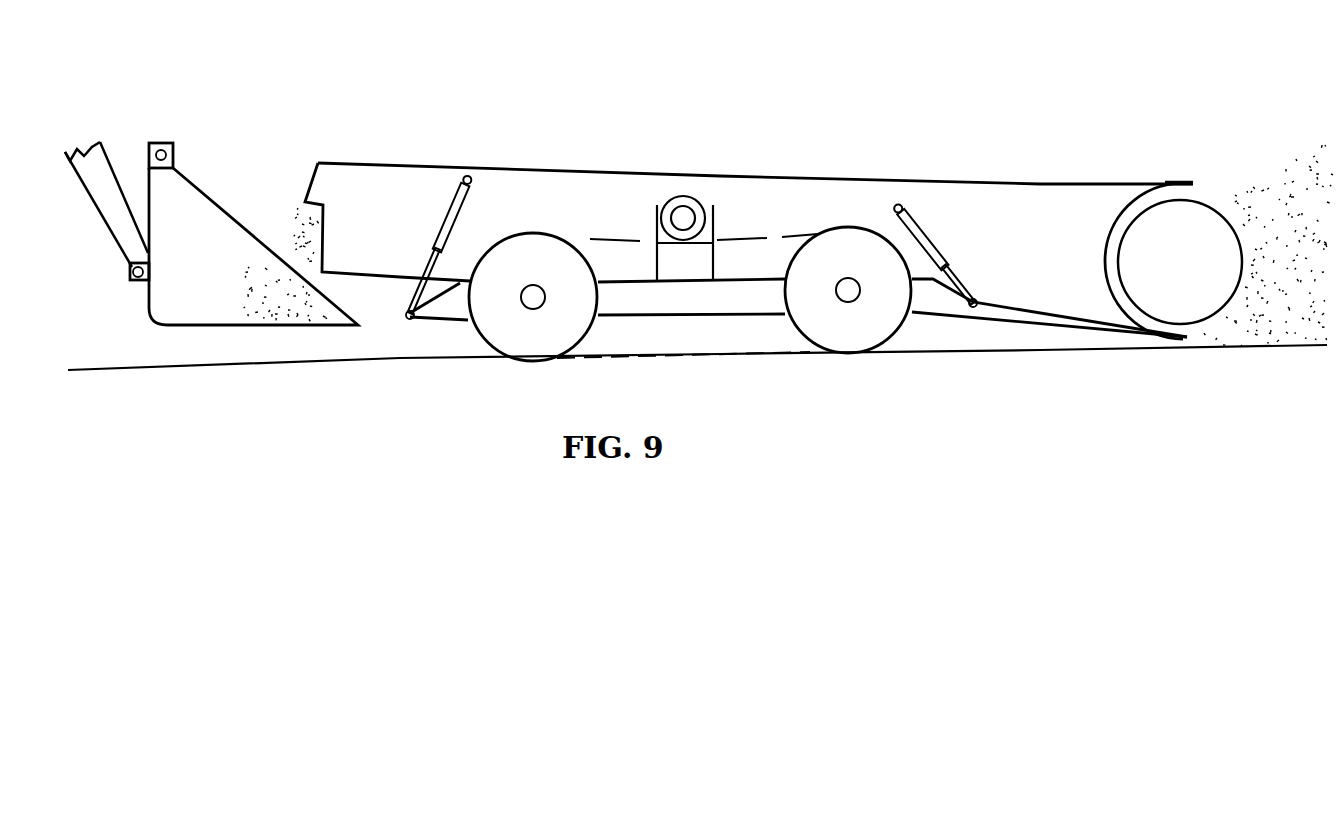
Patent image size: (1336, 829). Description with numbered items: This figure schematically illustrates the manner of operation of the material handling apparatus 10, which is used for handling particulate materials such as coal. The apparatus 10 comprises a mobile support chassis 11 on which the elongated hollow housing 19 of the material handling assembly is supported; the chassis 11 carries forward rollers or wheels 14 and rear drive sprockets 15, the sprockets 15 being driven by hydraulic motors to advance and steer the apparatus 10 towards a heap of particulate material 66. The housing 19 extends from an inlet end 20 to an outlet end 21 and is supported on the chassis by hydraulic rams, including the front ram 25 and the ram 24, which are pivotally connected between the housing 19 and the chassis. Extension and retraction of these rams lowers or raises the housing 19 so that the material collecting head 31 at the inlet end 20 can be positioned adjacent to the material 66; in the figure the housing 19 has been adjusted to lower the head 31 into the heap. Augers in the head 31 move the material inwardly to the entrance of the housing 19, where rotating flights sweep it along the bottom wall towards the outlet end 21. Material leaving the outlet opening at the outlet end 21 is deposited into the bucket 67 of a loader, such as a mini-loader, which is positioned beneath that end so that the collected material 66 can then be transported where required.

The material handling apparatus 10 is at (605, 160).
The mobile support chassis 11 is at (421, 336).
The forward rollers or wheels 14 is at (843, 342).
The rear drive sprockets 15 is at (523, 347).
The elongated hollow housing 19 is at (757, 177).
The inlet end 20 is at (1203, 151).
The outlet end 21 is at (302, 156).
The hydraulic ram 24 is at (447, 215).
The front hydraulic ram 25 is at (941, 257).
The material collecting head 31 is at (1163, 171).
The particulate material 66 is at (1268, 156).
The bucket 67 is at (227, 227).